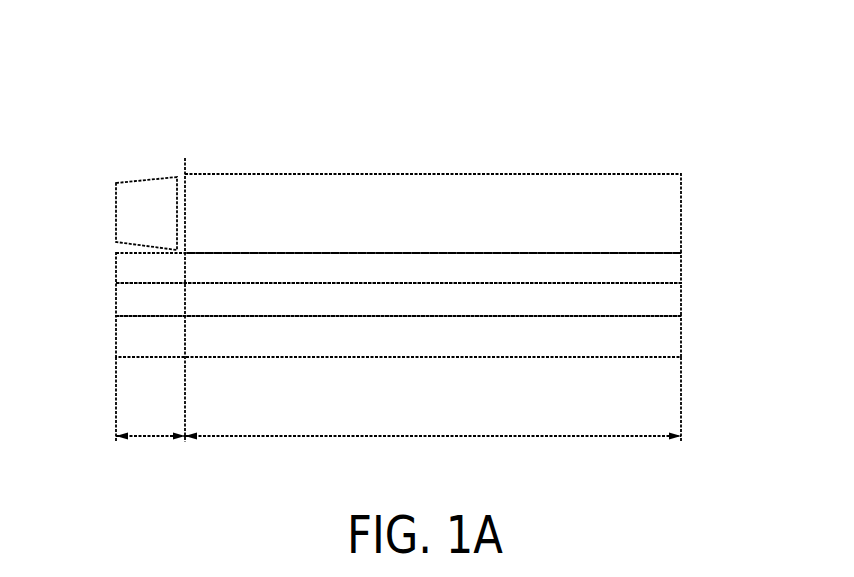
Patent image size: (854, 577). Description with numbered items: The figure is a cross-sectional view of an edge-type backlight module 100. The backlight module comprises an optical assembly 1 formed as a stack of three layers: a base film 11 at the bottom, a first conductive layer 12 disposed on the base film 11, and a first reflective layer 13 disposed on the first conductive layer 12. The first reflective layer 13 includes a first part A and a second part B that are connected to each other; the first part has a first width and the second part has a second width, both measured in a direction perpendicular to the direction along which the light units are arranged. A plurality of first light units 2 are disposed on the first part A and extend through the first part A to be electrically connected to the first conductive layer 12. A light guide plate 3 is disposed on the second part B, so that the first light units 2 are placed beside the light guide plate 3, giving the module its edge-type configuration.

The display device 100 is at (740, 51).
The optical assembly 1 is at (97, 267).
The base film 11 is at (681, 333).
The first conductive layer 12 is at (681, 304).
The first reflective layer 13 is at (681, 275).
The first light units 2 is at (114, 214).
The light guide plate 3 is at (681, 213).